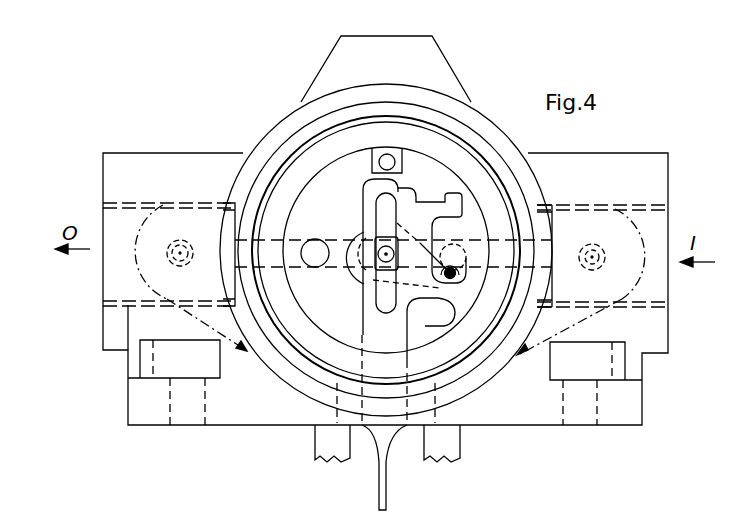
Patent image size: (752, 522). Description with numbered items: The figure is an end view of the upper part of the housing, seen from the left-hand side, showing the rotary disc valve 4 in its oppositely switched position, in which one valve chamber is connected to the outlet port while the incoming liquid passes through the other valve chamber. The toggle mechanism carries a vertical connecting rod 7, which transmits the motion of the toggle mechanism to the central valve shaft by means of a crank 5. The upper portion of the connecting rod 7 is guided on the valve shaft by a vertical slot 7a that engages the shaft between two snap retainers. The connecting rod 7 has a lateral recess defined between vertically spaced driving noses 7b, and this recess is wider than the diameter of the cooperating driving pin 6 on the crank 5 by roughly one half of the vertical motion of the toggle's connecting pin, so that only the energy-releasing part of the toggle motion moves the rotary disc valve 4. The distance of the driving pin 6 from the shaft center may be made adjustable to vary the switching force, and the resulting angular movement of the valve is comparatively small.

The rotary disc valve 4 is at (341, 216).
The crank 5 is at (416, 264).
The driving pin 6 is at (450, 273).
The connecting rod 7 is at (380, 329).
The vertical slot 7a is at (387, 210).
The driving noses 7b is at (447, 197).